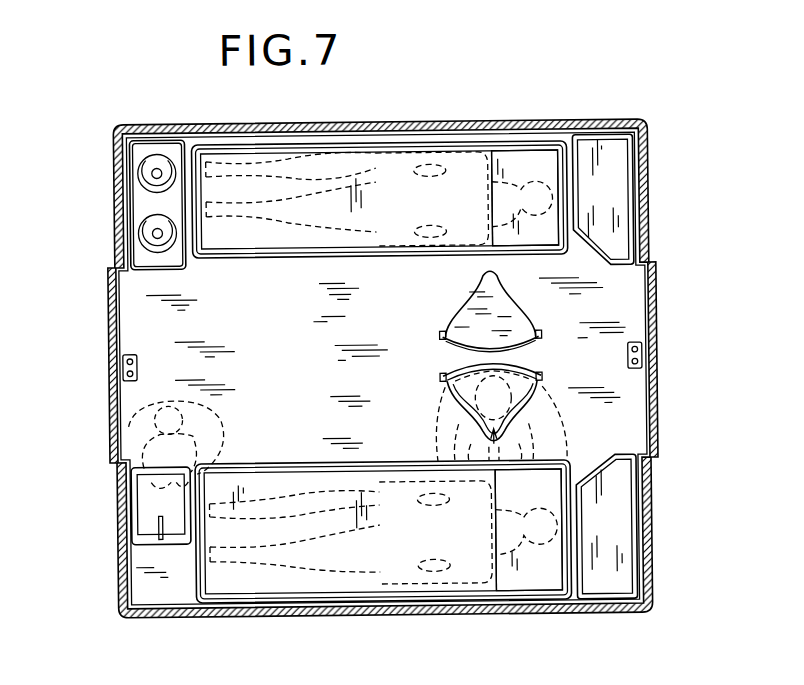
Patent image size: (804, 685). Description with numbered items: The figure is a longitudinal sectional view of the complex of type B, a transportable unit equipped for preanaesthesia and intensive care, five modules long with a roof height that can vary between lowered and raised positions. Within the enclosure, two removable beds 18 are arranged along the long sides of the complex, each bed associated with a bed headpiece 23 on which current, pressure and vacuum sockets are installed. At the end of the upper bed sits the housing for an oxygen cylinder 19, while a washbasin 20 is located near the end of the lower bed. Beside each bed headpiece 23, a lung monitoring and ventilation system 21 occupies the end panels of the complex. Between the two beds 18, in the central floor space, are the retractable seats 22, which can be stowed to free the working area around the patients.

The complex of type B is at (596, 116).
The removable beds 18 is at (268, 249).
The housing for an oxygen cylinder 19 is at (147, 224).
The washbasin 20 is at (146, 514).
The lung monitoring and ventilation system 21 is at (614, 187).
The retractable seats 22 is at (447, 380).
The bed headpiece 23 is at (537, 165).